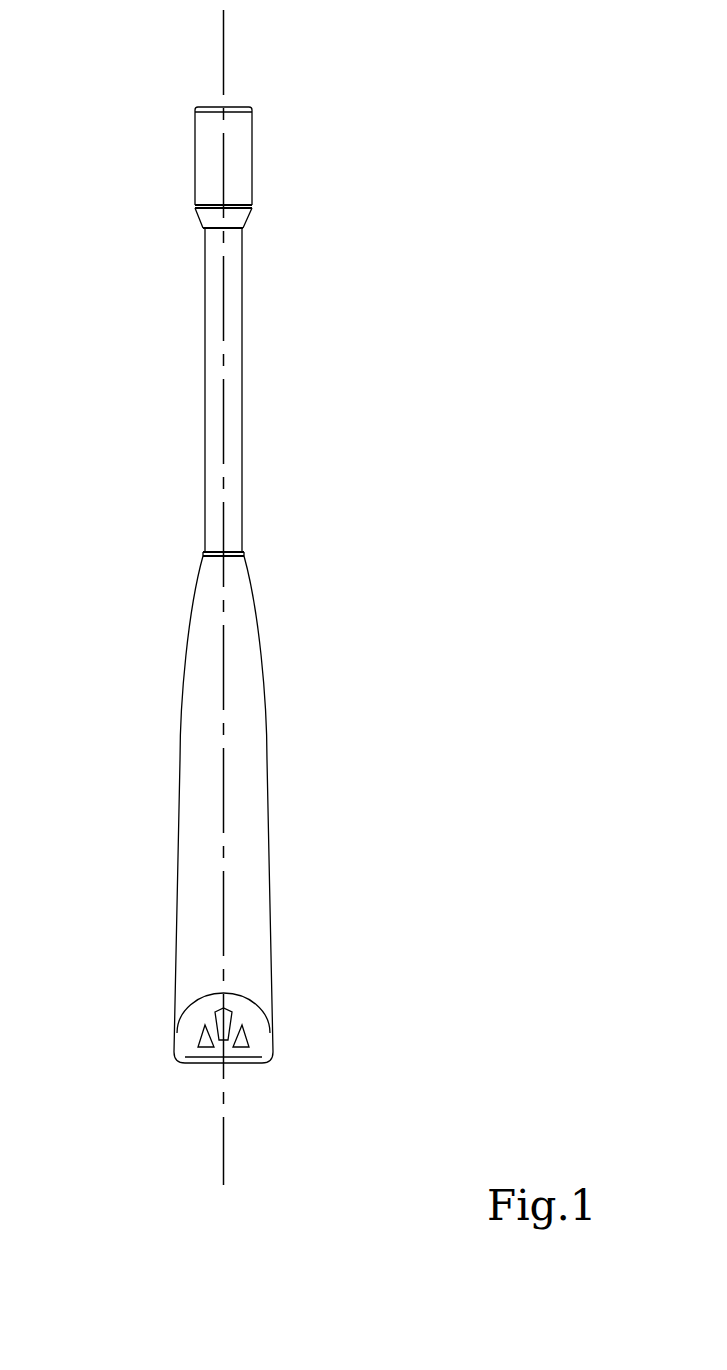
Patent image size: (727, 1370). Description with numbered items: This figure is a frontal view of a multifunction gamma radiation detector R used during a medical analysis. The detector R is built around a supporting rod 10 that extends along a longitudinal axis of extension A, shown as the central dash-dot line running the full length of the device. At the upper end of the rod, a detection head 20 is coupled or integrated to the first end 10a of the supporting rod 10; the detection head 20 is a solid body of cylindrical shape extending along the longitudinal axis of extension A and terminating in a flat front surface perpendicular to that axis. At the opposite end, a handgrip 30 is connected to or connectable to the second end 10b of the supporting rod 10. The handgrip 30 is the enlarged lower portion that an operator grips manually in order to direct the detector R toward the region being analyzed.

The multifunction gamma radiation detector R is at (366, 109).
The longitudinal axis of extension A is at (222, 433).
The detection head 20 is at (178, 145).
The supporting rod 10 is at (202, 373).
The first end 10a is at (203, 228).
The second end 10b is at (203, 552).
The handgrip 30 is at (163, 735).